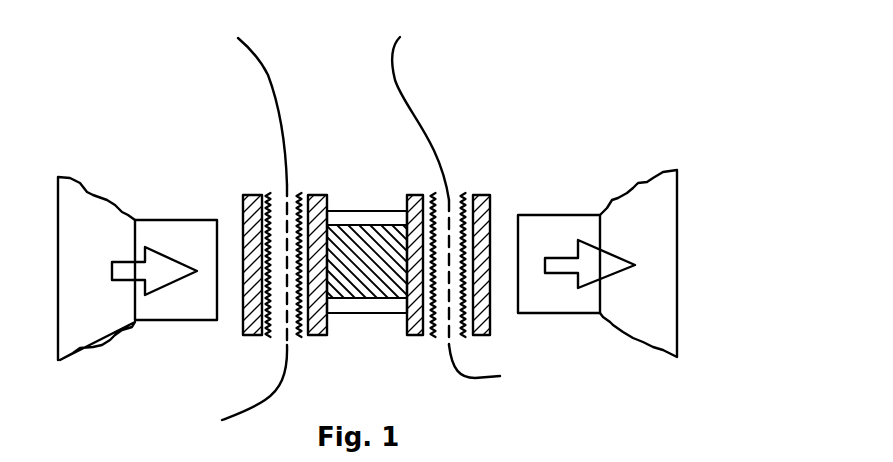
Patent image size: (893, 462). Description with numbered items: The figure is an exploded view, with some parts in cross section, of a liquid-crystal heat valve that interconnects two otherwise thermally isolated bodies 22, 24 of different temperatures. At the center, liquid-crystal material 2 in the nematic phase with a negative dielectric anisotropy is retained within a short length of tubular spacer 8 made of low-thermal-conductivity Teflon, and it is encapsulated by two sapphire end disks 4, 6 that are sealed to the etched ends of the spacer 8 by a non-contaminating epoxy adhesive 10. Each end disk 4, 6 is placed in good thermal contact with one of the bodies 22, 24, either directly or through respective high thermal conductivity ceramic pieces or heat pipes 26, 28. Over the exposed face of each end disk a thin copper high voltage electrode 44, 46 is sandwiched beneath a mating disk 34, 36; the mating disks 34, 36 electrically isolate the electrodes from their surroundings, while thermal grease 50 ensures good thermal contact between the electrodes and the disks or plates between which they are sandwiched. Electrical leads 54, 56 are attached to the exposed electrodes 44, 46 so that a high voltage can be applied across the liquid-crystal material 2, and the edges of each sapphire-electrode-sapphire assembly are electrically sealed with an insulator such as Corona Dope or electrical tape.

The liquid-crystal material 2 is at (360, 282).
The end disk 4 is at (320, 335).
The end disk 6 is at (413, 335).
The tubular spacer 8 is at (392, 211).
The epoxy adhesive 10 is at (367, 250).
The thermally isolated body 22 is at (90, 192).
The thermally isolated body 24 is at (637, 185).
The heat pipe 26 is at (158, 220).
The heat pipe 28 is at (545, 215).
The mating disk 34 is at (244, 326).
The mating disk 36 is at (490, 322).
The high voltage electrode 44 is at (238, 311).
The high voltage electrode 46 is at (491, 297).
The thermal grease 50 is at (266, 195).
The electrical lead 54 is at (263, 63).
The electrical lead 56 is at (397, 53).